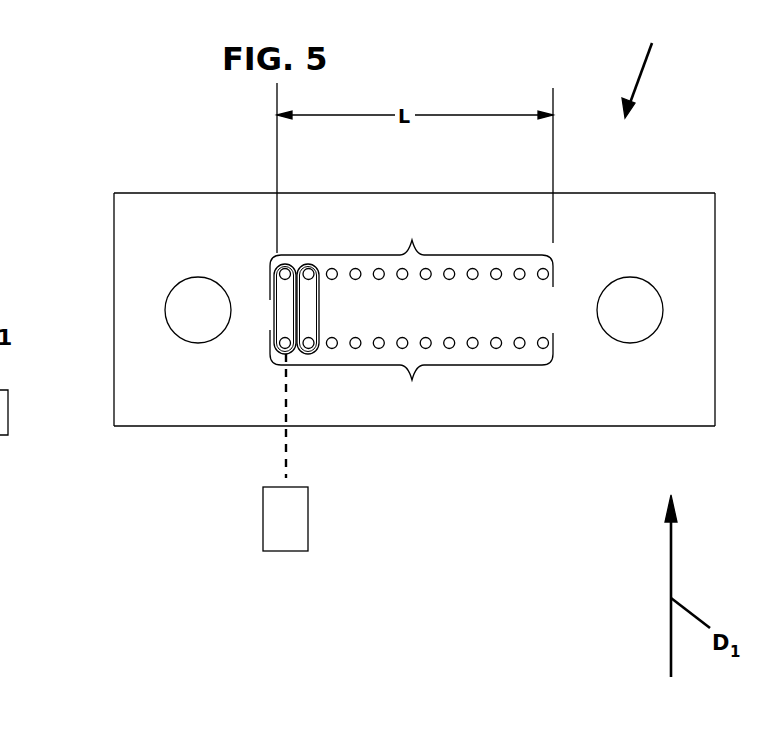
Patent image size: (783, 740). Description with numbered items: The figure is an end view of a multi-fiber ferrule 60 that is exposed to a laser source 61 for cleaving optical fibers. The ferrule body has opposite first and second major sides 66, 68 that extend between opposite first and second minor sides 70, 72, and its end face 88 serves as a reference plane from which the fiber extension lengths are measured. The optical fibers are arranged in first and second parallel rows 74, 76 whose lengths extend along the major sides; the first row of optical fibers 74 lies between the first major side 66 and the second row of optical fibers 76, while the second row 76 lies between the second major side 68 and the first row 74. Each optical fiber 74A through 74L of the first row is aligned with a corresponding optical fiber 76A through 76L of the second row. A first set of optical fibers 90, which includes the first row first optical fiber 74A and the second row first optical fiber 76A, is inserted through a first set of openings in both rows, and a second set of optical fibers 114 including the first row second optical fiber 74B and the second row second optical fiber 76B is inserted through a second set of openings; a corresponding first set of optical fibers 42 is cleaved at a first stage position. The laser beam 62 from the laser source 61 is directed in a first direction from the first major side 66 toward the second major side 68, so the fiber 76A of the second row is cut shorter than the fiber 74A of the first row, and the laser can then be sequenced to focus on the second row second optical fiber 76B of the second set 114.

The multi-fiber ferrule 60 is at (645, 69).
The laser source 61 is at (297, 527).
The laser beam 62 is at (285, 452).
The first major side 66 is at (527, 426).
The second major side 68 is at (683, 193).
The first minor side 70 is at (114, 258).
The second minor side 72 is at (715, 308).
The first row of optical fibers 74 is at (414, 402).
The first row first optical fiber 74A is at (283, 349).
The first row second optical fiber 74B is at (311, 350).
The first row last optical fiber 74L is at (548, 348).
The second row of optical fibers 76 is at (401, 220).
The second row first optical fiber 76A is at (283, 268).
The second row second optical fiber 76B is at (309, 268).
The second row last optical fiber 76L is at (547, 270).
The end face 88 is at (697, 392).
The first set of optical fibers 90 is at (272, 300).
The first set of optical fibers 42 is at (270, 327).
The second set of optical fibers 114 is at (322, 307).